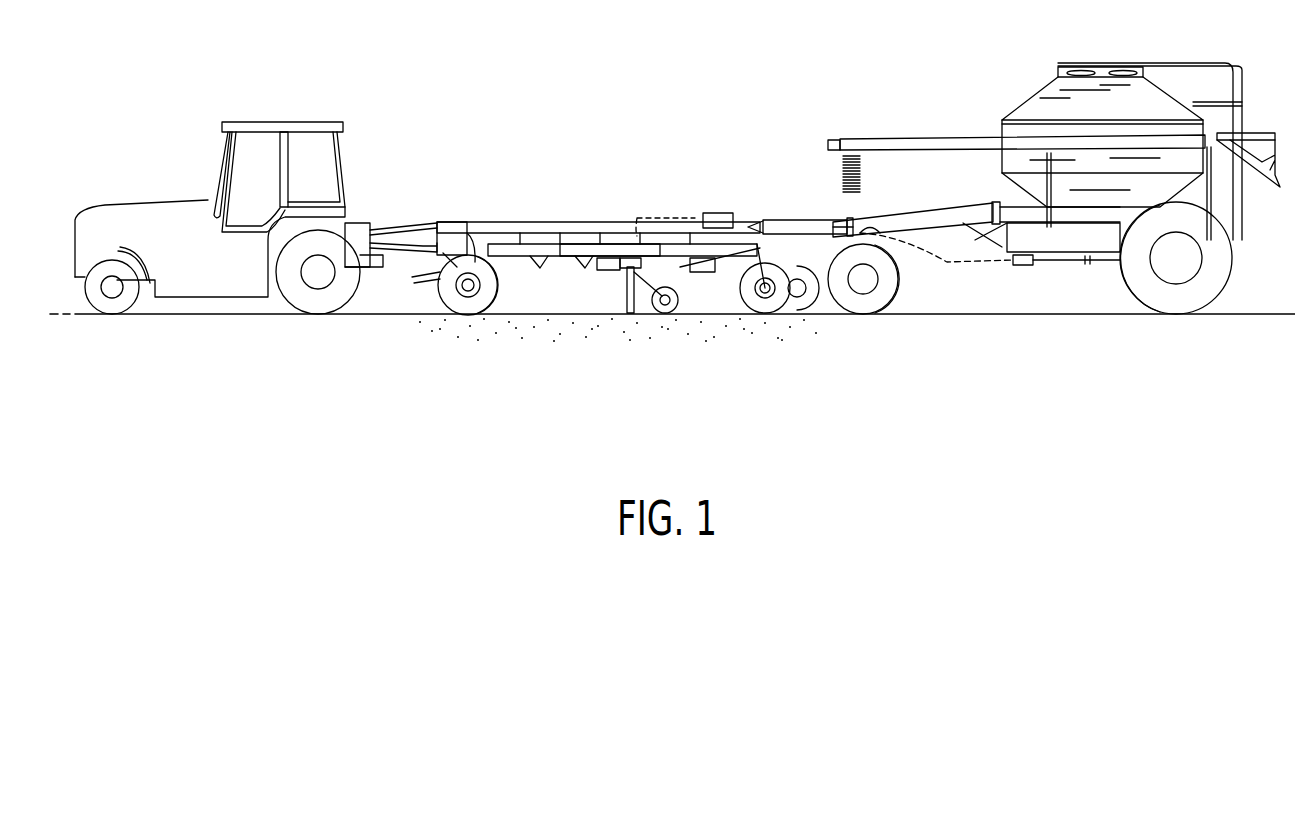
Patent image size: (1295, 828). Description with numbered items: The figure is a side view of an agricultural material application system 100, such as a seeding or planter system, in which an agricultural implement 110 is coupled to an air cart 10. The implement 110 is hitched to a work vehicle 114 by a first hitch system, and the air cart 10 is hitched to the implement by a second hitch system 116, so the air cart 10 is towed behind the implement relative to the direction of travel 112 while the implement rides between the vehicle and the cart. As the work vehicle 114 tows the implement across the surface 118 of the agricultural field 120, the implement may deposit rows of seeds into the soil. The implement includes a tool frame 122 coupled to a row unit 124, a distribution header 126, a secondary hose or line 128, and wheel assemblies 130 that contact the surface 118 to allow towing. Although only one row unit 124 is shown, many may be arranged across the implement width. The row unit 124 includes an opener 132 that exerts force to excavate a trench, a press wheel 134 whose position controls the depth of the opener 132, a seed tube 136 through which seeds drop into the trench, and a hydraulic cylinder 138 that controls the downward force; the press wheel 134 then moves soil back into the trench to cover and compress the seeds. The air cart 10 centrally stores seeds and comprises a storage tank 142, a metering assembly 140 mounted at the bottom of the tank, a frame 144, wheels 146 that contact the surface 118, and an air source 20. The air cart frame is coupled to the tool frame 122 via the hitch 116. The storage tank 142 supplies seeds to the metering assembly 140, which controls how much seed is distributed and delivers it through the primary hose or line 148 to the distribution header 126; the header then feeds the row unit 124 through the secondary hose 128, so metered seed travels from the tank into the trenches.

The air cart 10 is at (1056, 174).
The air source 20 is at (1220, 210).
The agricultural material application system 100 is at (611, 278).
The agricultural implement 110 is at (520, 222).
The direction of travel 112 is at (689, 123).
The work vehicle 114 is at (276, 108).
The second hitch system 116 is at (750, 220).
The surface 118 is at (1023, 316).
The agricultural field 120 is at (672, 368).
The tool frame 122 is at (623, 250).
The row unit 124 is at (609, 340).
The distribution header 126 is at (717, 213).
The hose or line 128 is at (670, 218).
The wheel assemblies 130 is at (452, 318).
The opener 132 is at (627, 314).
The press wheel 134 is at (678, 302).
The seed tube 136 is at (649, 303).
The hydraulic cylinder 138 is at (590, 284).
The metering assembly 140 is at (1070, 248).
The storage tank 142 is at (1053, 98).
The frame 144 is at (915, 213).
The wheels 146 is at (913, 290).
The hose or line 148 is at (952, 267).